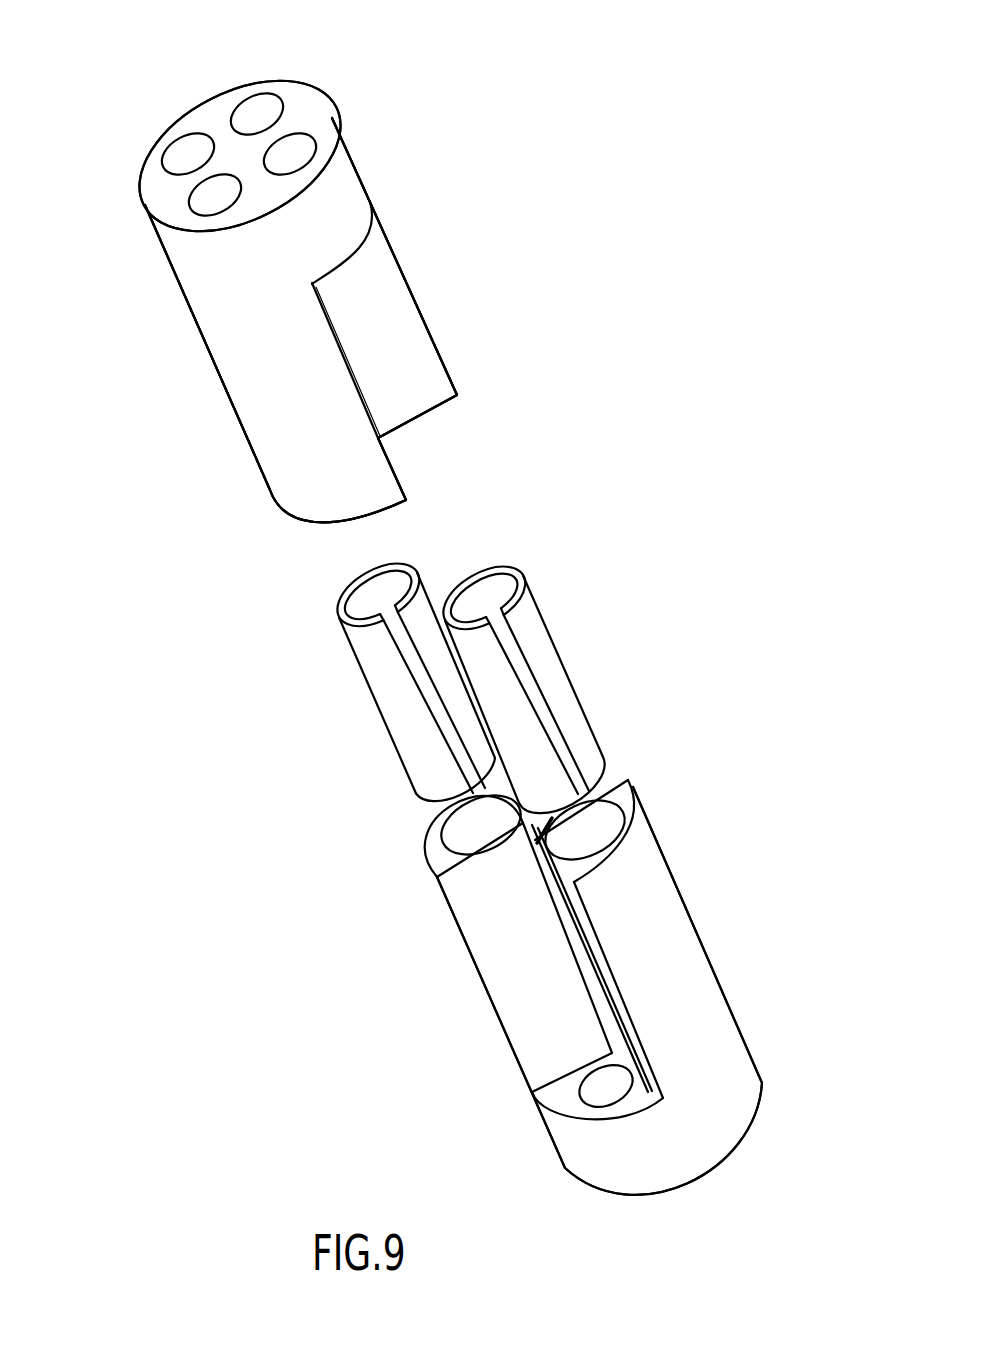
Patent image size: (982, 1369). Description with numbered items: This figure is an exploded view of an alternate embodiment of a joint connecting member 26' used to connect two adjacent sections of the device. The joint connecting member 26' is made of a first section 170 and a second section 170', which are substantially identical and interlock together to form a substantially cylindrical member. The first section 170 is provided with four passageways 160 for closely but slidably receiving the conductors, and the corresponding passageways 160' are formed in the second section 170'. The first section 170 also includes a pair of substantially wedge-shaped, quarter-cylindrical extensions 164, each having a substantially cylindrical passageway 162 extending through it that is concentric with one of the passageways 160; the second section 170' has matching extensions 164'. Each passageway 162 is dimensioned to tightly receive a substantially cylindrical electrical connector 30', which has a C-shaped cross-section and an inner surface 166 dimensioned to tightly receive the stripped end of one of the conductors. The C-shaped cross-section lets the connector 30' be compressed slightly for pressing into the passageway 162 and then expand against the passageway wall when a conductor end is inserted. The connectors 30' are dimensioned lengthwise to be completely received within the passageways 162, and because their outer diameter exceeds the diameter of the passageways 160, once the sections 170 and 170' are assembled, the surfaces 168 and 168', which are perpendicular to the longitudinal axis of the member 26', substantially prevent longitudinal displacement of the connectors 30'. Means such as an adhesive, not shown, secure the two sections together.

The joint connecting member 26' is at (386, 286).
The passageways 160' is at (247, 129).
The wedge-shaped extensions 164' is at (286, 286).
The surface 168' is at (387, 310).
The second section 170' is at (274, 320).
The electrical connector 30' is at (490, 689).
The inner surface 166 is at (510, 588).
The cylindrical passageway 162 is at (433, 832).
The wedge-shaped extensions 164 is at (578, 987).
The surface 168 is at (551, 1013).
The passageways 160 is at (529, 1086).
The first section 170 is at (640, 991).